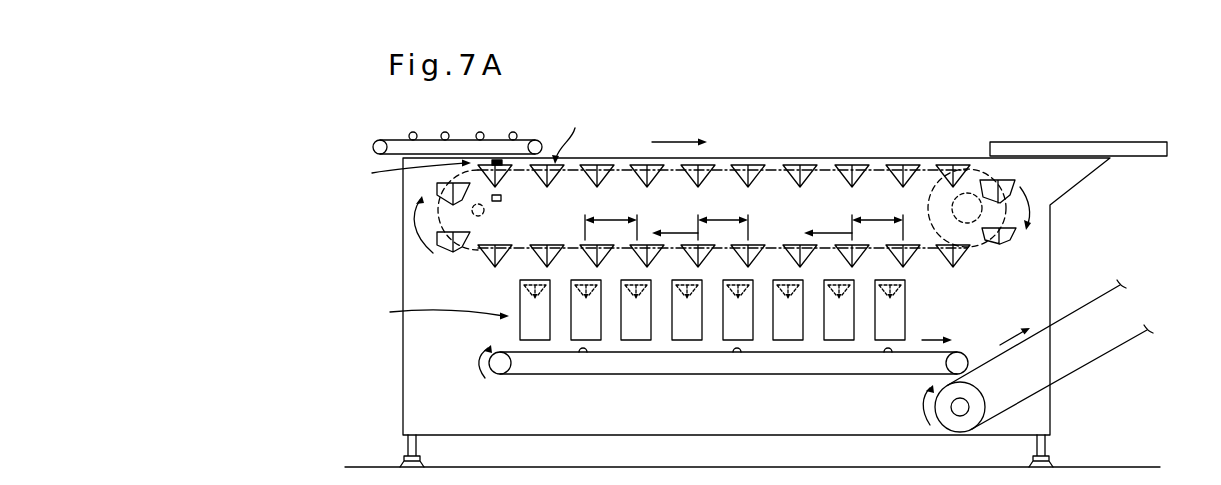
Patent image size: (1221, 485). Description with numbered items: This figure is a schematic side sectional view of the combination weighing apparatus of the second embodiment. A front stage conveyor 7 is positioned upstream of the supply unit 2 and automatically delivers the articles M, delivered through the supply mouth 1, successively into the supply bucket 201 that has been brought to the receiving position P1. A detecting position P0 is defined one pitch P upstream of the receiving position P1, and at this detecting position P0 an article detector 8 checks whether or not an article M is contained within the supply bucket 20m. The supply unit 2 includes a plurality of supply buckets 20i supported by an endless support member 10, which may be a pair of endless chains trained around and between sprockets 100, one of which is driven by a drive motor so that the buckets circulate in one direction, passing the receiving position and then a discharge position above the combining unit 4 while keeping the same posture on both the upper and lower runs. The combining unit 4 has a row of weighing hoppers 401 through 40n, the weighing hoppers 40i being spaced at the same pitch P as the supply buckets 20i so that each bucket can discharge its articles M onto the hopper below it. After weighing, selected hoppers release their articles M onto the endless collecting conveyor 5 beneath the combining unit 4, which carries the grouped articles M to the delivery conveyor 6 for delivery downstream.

The front stage conveyor 7 is at (376, 141).
The articles M is at (445, 132).
The supply mouth 1 is at (547, 148).
The detecting position P0 is at (416, 174).
The receiving position P1 is at (573, 133).
The supply unit 2 is at (728, 152).
The supply bucket 20m is at (500, 173).
The supply bucket 201 is at (562, 178).
The supply buckets 20i is at (708, 164).
The pitch P is at (744, 217).
The article detector 8 is at (502, 203).
The endless support member 10 is at (928, 166).
The sprockets 100 is at (980, 248).
The combining unit 4 is at (390, 323).
The weighing hopper 401 is at (520, 292).
The weighing hoppers 40i is at (618, 310).
The weighing hopper 40n is at (906, 290).
The collecting conveyor 5 is at (655, 376).
The delivery conveyor 6 is at (1081, 369).